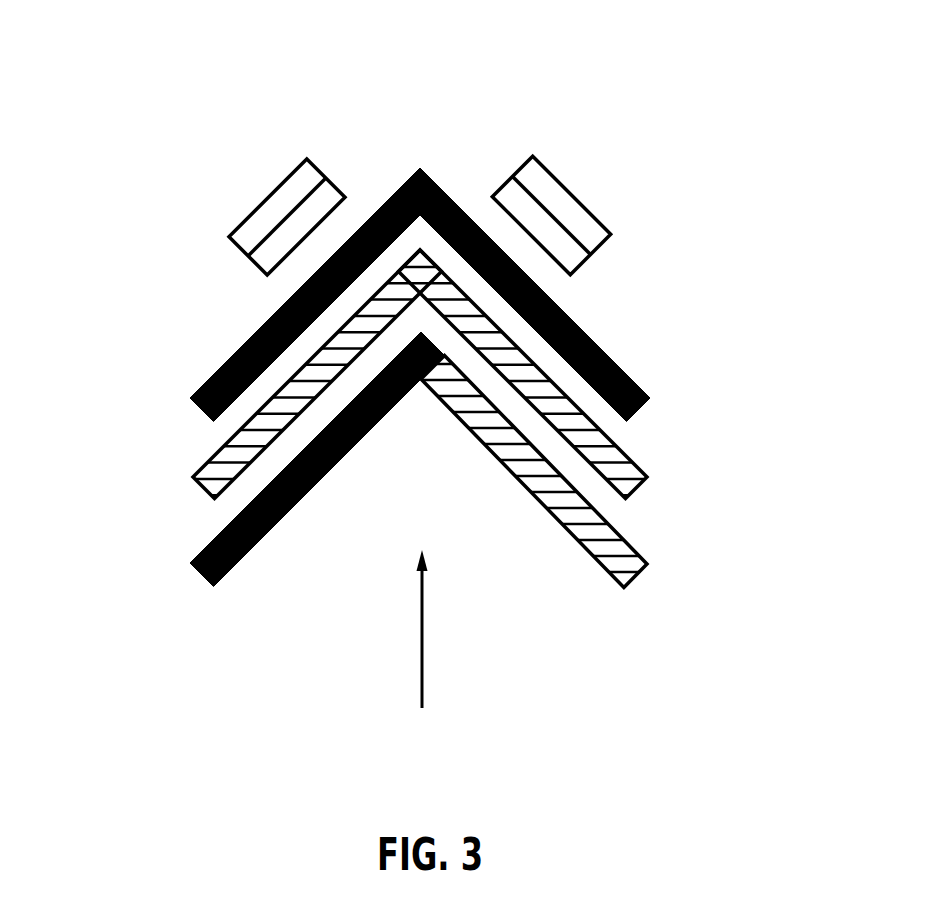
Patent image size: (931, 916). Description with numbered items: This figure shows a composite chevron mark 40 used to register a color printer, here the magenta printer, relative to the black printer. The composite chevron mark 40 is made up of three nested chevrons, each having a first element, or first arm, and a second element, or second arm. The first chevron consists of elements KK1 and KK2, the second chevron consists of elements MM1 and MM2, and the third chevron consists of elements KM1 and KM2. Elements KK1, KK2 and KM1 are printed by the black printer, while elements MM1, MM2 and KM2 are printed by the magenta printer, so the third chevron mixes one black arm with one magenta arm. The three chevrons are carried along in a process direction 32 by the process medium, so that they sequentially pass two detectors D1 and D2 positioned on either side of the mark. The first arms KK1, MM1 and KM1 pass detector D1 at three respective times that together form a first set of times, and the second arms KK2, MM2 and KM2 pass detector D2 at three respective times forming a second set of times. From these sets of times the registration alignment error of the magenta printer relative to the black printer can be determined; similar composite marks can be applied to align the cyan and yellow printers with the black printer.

The composite chevron mark 40 is at (423, 299).
The process direction 32 is at (422, 653).
The detector D1 is at (270, 195).
The detector D2 is at (570, 193).
The first element of first chevron KK1 is at (150, 413).
The second element of first chevron KK2 is at (695, 413).
The first element of second chevron MM1 is at (150, 495).
The second element of second chevron MM2 is at (695, 495).
The first element of third chevron KM1 is at (150, 578).
The second element of third chevron KM2 is at (695, 578).